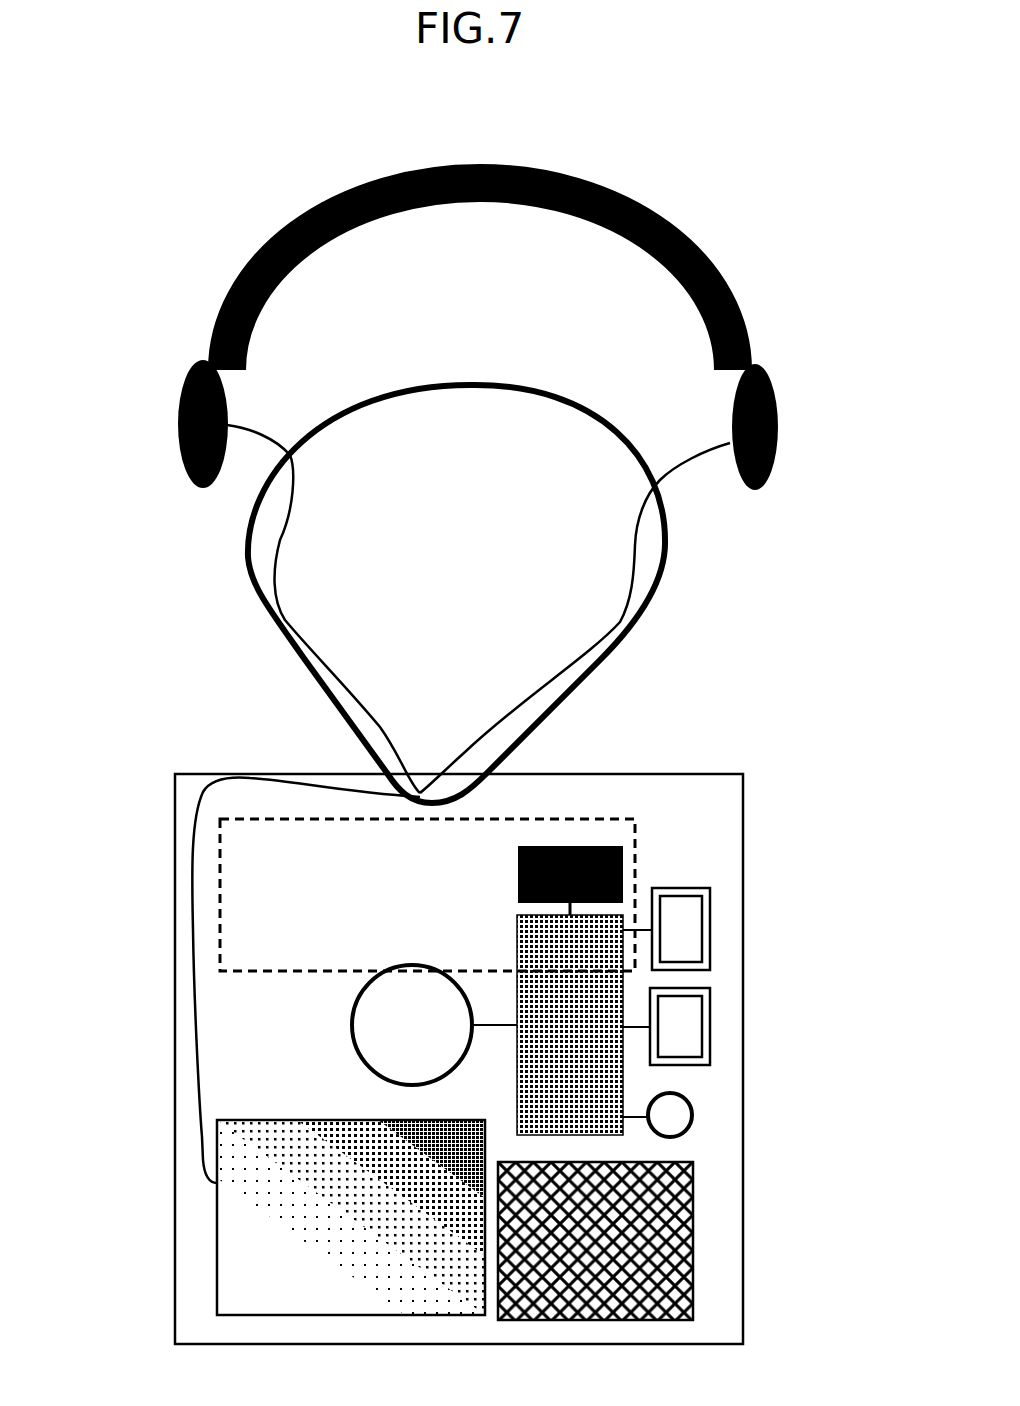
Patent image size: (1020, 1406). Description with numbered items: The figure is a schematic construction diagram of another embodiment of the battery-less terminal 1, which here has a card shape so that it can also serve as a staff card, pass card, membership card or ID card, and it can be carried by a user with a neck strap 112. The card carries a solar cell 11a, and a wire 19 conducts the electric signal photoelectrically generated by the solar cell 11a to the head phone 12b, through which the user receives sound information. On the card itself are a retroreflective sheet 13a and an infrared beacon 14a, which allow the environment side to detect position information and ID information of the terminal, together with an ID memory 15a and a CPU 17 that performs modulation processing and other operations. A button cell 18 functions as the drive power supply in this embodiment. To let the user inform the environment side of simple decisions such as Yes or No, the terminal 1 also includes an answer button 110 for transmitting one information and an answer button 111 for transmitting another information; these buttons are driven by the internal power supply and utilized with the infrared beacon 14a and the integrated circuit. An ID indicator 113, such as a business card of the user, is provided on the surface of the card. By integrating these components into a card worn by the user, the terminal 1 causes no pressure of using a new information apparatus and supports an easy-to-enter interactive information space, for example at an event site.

The battery-less terminal 1 is at (732, 777).
The head phone 12b is at (257, 262).
The neck strap 112 is at (250, 562).
The wire 19 is at (193, 830).
The ID indicator 113 is at (223, 898).
The ID memory 15a is at (623, 875).
The CPU 17 is at (563, 1138).
The answer button 110 is at (710, 928).
The answer button 111 is at (710, 1027).
The button cell 18 is at (352, 1025).
The infrared beacon 14a is at (693, 1113).
The solar cell 11a is at (213, 1214).
The retroreflective sheet 13a is at (693, 1242).